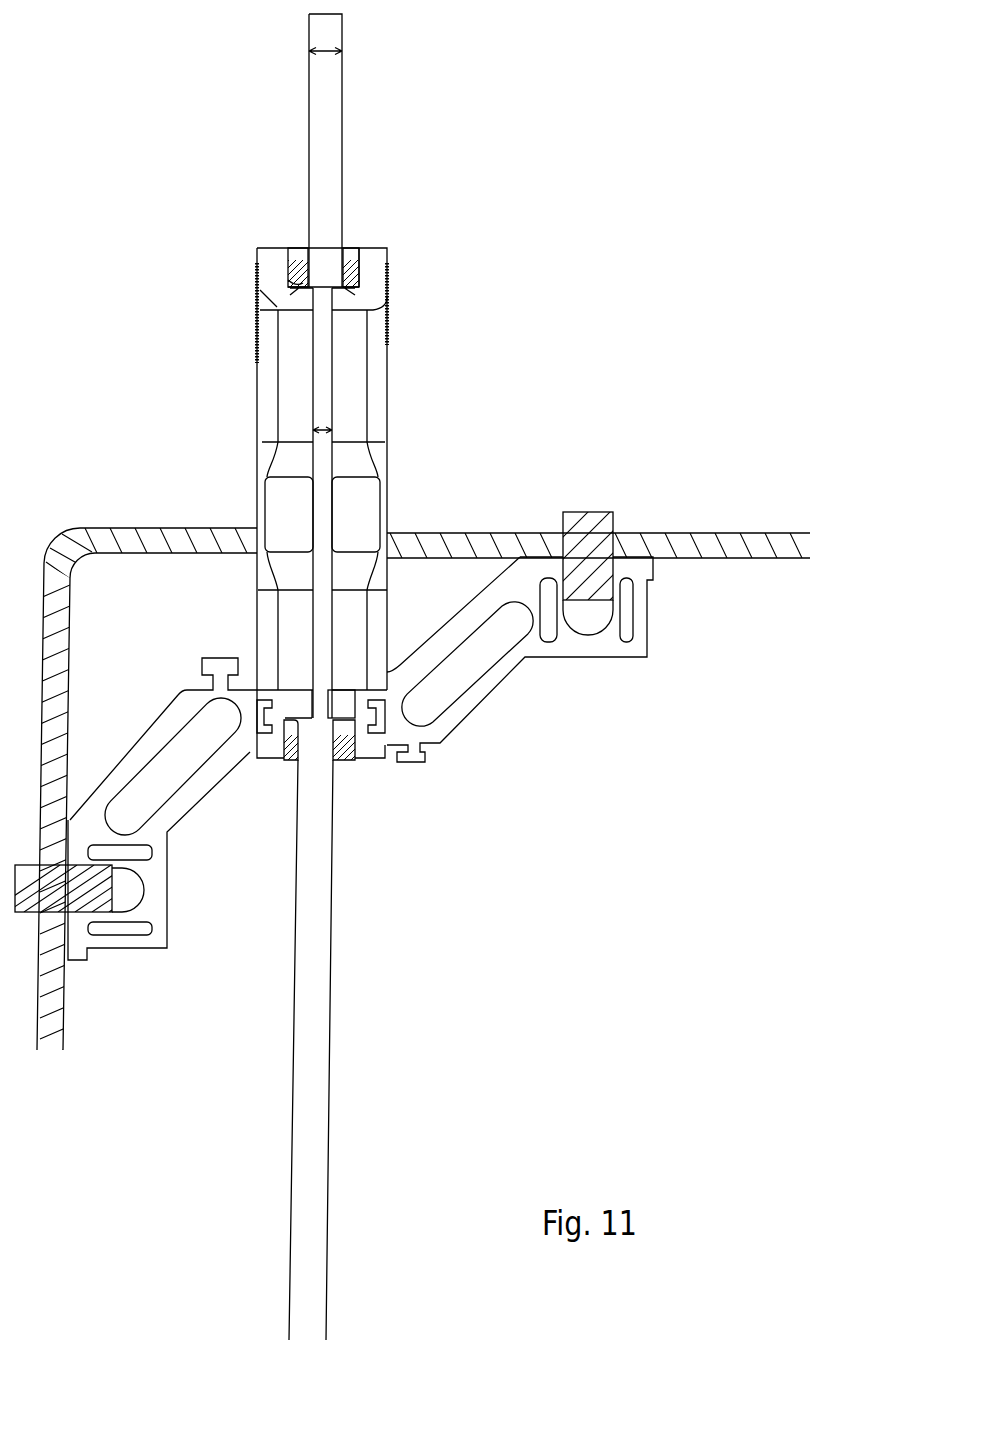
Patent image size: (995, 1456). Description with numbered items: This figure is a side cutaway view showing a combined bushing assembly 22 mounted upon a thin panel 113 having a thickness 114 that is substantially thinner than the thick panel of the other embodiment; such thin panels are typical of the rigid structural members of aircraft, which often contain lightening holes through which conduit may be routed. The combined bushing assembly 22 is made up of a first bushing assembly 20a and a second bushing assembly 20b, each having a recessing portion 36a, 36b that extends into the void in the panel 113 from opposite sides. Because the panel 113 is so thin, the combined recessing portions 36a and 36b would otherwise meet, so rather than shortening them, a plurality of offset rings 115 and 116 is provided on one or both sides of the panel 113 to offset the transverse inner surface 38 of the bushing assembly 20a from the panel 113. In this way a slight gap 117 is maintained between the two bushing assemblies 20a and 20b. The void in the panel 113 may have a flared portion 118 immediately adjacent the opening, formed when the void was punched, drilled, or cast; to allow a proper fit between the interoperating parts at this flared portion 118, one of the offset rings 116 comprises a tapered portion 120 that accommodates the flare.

The panel 113 is at (343, 118).
The thickness 114 is at (322, 53).
The offset ring 115 is at (341, 248).
The offset ring 116 is at (298, 248).
The gap 117 is at (332, 432).
The flared portion 118 is at (297, 297).
The tapered portion 120 is at (297, 283).
The first bushing assembly 20a is at (387, 277).
The second bushing assembly 20b is at (257, 406).
The combined bushing assembly 22 is at (425, 517).
The recessing portion 36a is at (343, 290).
The recessing portion 36b is at (312, 289).
The transverse inner surface 38 is at (360, 250).